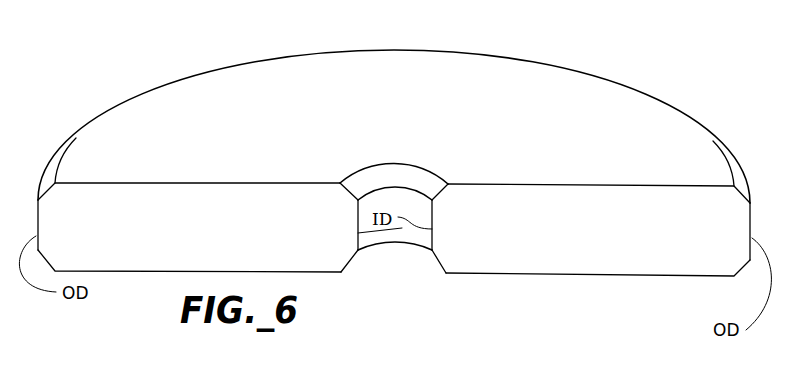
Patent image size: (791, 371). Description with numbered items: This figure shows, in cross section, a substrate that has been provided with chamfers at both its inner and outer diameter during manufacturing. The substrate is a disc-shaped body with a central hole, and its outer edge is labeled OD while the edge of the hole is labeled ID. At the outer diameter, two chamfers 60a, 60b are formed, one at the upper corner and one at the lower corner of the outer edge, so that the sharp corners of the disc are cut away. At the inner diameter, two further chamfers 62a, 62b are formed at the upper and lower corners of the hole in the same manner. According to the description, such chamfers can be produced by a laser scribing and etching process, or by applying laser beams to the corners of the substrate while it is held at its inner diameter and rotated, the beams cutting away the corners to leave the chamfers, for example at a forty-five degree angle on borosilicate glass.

The chamfer 60a is at (749, 166).
The chamfer 60b is at (745, 280).
The chamfer 62a is at (428, 180).
The chamfer 62b is at (437, 271).